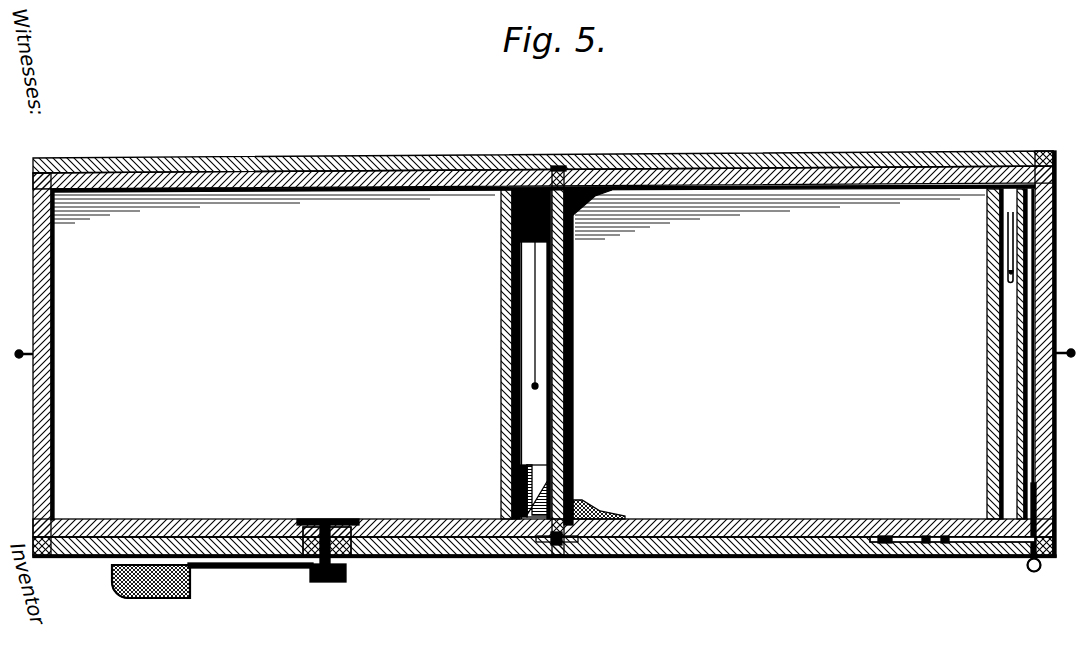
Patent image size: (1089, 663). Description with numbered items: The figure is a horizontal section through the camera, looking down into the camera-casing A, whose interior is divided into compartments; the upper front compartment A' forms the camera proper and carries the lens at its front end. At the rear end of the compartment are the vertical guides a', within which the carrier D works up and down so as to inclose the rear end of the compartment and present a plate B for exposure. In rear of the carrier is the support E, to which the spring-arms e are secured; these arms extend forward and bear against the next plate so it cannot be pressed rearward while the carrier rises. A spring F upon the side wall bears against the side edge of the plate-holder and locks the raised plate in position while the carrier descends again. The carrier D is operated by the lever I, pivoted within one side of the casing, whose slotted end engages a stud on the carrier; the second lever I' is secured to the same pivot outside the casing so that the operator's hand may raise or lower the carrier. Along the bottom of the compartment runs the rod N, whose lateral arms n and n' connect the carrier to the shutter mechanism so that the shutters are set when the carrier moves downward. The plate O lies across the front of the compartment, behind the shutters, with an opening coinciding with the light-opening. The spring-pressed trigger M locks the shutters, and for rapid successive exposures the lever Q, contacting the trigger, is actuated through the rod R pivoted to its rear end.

The camera-casing A is at (546, 357).
The upper front compartment A' is at (519, 262).
The vertical guide a' is at (579, 356).
The prepared plate B is at (574, 269).
The carrier D is at (574, 314).
The support E is at (501, 328).
The spring F is at (543, 353).
The rod N is at (655, 158).
The spring-arm e is at (510, 237).
The lateral arm n' is at (537, 326).
The lateral arm n is at (988, 247).
The plate O is at (1000, 299).
The spring-pressed trigger M is at (1040, 502).
The lever I is at (531, 387).
The second lever I' is at (235, 558).
The rod R is at (850, 548).
The lever Q is at (888, 548).